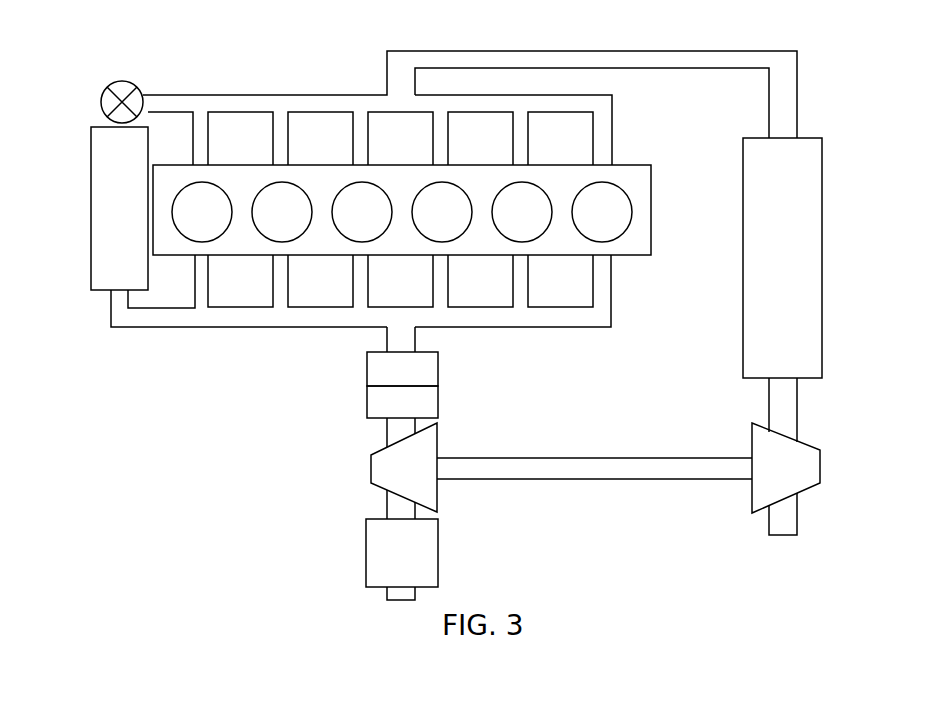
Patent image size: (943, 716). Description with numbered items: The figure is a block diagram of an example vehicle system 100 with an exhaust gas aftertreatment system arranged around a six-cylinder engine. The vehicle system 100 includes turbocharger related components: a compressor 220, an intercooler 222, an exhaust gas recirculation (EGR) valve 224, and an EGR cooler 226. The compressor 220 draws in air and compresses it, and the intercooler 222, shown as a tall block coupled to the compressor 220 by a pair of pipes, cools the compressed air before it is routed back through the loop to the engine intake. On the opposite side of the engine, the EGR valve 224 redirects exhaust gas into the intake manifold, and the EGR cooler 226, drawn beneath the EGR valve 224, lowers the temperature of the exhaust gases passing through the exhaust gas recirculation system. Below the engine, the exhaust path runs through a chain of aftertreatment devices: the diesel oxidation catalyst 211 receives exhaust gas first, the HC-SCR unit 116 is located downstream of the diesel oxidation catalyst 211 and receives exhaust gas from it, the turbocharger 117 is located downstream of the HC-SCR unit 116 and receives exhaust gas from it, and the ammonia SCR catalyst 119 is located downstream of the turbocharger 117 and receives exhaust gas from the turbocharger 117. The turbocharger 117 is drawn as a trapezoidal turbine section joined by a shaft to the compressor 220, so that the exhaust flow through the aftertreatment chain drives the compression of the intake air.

The vehicle system 100 is at (804, 44).
The exhaust gas recirculation (EGR) valve 224 is at (101, 102).
The EGR cooler 226 is at (90, 210).
The intercooler 222 is at (821, 232).
The compressor 220 is at (822, 462).
The diesel oxidation catalyst 211 is at (367, 363).
The HC-SCR unit 116 is at (367, 395).
The turbocharger 117 is at (371, 465).
The ammonia SCR catalyst 119 is at (367, 563).